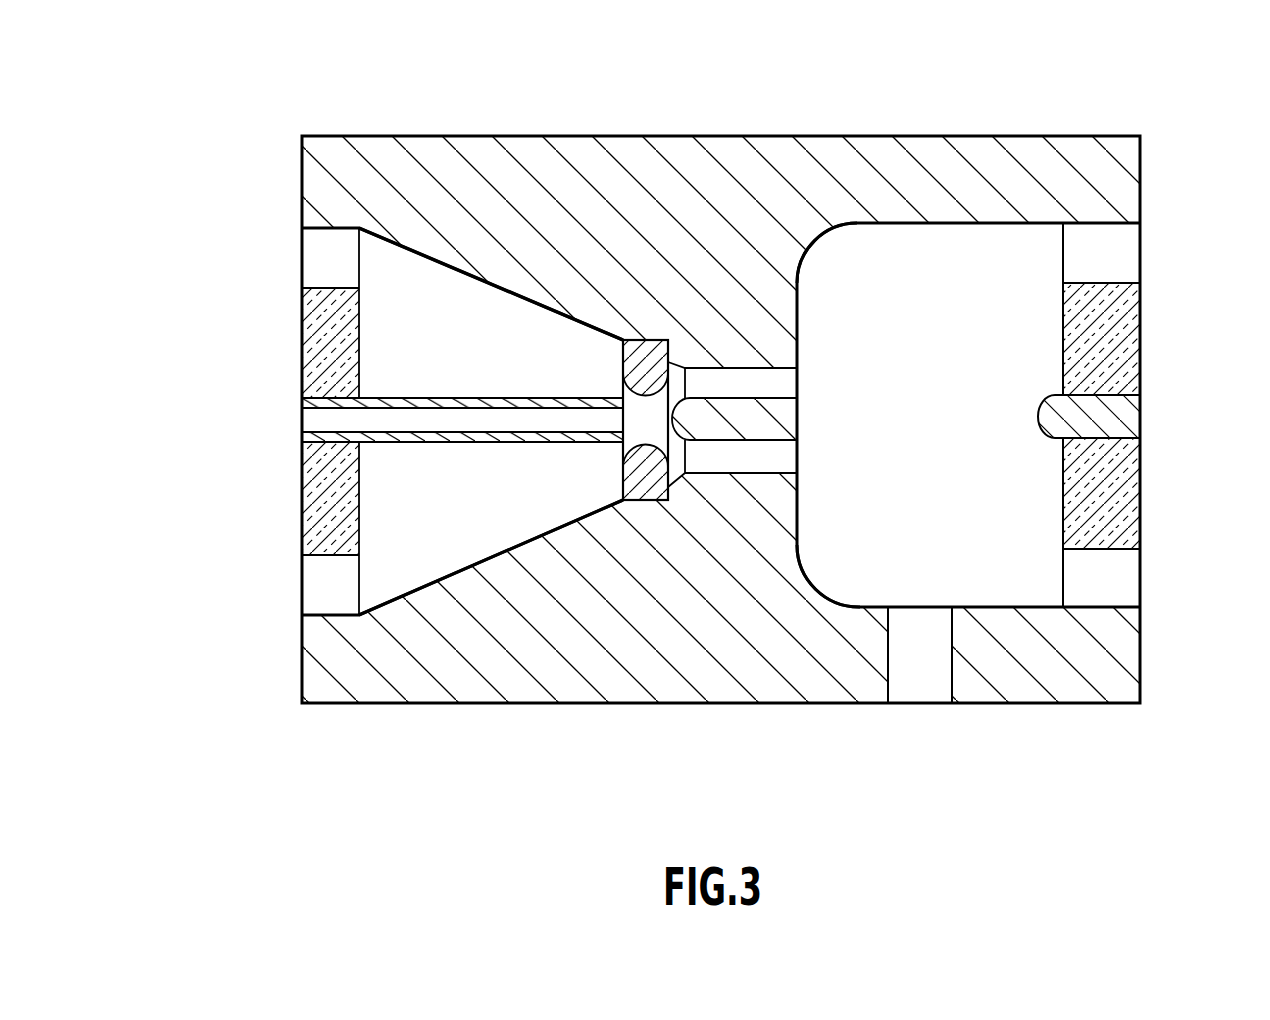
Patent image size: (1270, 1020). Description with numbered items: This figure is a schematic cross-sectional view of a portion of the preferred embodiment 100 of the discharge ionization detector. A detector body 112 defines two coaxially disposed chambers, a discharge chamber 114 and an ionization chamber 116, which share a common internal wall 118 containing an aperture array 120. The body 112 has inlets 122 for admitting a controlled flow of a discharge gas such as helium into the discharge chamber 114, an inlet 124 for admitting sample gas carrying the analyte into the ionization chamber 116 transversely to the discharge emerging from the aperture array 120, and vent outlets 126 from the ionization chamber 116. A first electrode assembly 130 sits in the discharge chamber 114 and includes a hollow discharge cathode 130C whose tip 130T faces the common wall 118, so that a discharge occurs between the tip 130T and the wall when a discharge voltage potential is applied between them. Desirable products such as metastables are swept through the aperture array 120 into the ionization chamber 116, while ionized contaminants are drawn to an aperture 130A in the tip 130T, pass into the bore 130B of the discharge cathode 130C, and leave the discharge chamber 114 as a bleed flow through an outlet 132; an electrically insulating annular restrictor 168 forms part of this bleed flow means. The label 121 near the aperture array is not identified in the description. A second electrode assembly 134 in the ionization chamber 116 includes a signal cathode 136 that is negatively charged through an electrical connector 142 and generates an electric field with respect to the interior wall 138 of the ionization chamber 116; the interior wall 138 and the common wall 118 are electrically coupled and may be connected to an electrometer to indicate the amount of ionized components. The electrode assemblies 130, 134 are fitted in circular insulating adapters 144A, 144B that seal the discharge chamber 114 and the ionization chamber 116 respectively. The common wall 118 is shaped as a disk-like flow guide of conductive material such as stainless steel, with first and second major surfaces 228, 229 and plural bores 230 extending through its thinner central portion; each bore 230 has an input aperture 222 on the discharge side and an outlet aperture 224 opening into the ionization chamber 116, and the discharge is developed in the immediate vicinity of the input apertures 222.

The preferred embodiment of the discharge ionization detector 100 is at (727, 429).
The detector body 112 is at (951, 136).
The discharge chamber 114 is at (425, 383).
The ionization chamber 116 is at (1033, 300).
The common internal wall 118 is at (785, 100).
The aperture array 120 is at (806, 445).
The passage surface 121 is at (845, 400).
The inlets 122 is at (318, 265).
The inlet 124 is at (910, 688).
The vent outlets 126 is at (1129, 261).
The first electrode assembly 130 is at (434, 444).
The aperture 130A is at (619, 442).
The bore 130B is at (478, 398).
The discharge cathode 130C is at (455, 442).
The tip 130T is at (622, 397).
The outlet 132 is at (298, 428).
The second electrode assembly 134 is at (1025, 457).
The signal cathode 136 is at (1035, 402).
The interior wall 138 is at (813, 245).
The electrical connector 142 is at (1133, 416).
The insulating adapter 144A is at (305, 318).
The insulating adapter 144B is at (1138, 300).
The annular restrictor 168 is at (620, 498).
The input aperture 222 is at (787, 396).
The outlet aperture 224 is at (785, 455).
The first major surface 228 is at (462, 283).
The second major surface 229 is at (803, 560).
The bores 230 is at (752, 367).